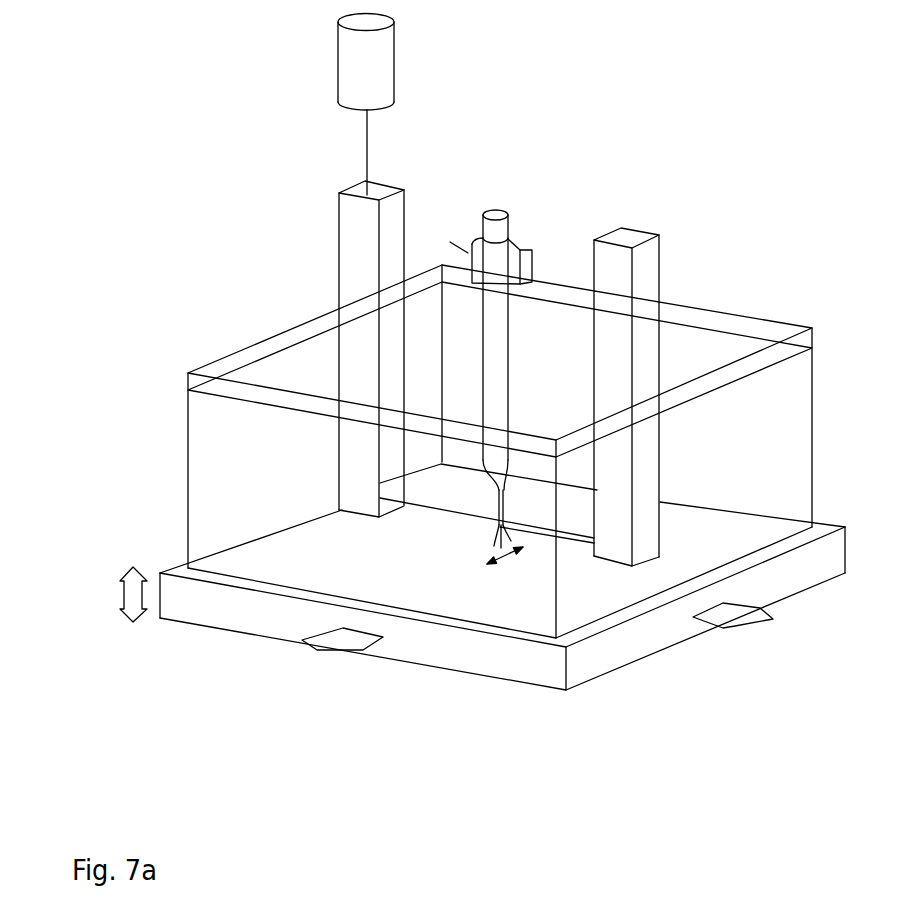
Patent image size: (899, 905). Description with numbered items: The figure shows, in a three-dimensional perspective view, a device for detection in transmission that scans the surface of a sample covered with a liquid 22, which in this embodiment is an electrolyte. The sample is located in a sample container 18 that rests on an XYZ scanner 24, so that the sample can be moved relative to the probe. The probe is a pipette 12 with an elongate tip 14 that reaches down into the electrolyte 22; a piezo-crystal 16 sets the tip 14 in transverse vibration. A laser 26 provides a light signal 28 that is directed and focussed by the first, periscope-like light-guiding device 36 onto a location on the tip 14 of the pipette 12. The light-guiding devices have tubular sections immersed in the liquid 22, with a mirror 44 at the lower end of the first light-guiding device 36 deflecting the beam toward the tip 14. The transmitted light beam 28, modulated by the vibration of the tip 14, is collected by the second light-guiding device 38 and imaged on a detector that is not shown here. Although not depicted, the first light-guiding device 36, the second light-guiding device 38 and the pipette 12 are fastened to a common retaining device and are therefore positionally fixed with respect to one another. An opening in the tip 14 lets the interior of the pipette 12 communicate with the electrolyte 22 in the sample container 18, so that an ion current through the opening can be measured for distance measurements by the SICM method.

The pipette 12 is at (482, 224).
The tip 14 is at (495, 545).
The piezo-crystal 16 is at (535, 262).
The sample container 18 is at (811, 330).
The liquid 22 is at (767, 435).
The XYZ scanner 24 is at (502, 664).
The laser 26 is at (388, 53).
The light signal 28 is at (427, 505).
The first light-guiding device 36 is at (333, 259).
The second light-guiding device 38 is at (667, 273).
The mirror 44 is at (386, 508).